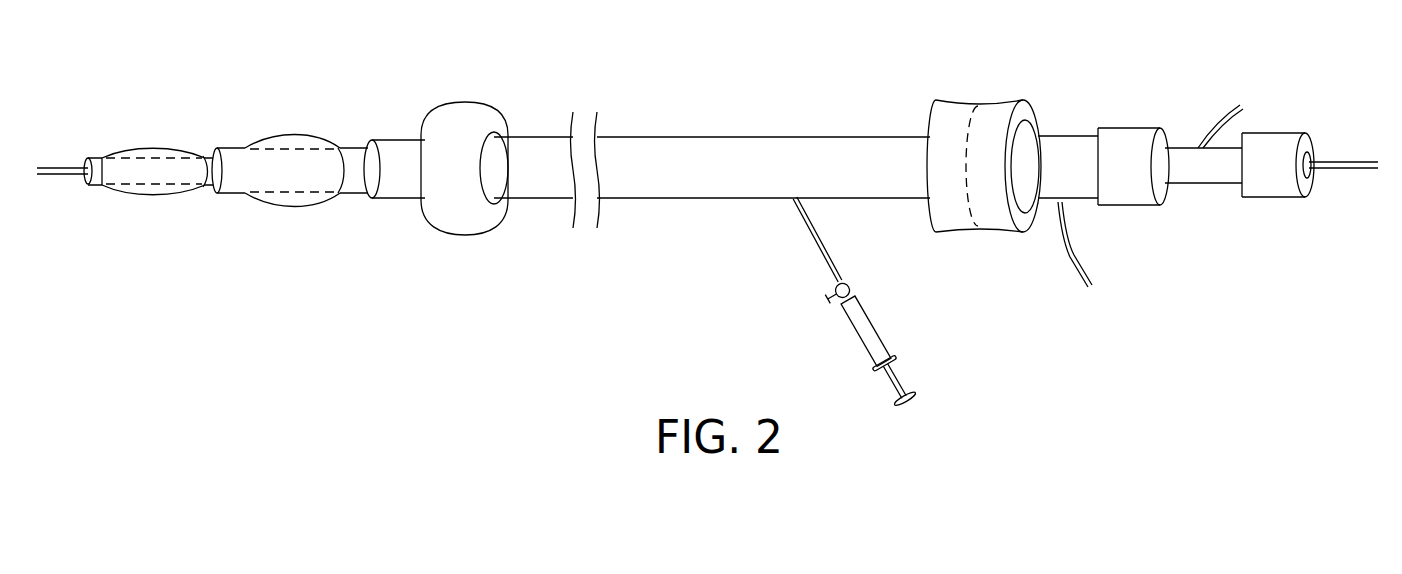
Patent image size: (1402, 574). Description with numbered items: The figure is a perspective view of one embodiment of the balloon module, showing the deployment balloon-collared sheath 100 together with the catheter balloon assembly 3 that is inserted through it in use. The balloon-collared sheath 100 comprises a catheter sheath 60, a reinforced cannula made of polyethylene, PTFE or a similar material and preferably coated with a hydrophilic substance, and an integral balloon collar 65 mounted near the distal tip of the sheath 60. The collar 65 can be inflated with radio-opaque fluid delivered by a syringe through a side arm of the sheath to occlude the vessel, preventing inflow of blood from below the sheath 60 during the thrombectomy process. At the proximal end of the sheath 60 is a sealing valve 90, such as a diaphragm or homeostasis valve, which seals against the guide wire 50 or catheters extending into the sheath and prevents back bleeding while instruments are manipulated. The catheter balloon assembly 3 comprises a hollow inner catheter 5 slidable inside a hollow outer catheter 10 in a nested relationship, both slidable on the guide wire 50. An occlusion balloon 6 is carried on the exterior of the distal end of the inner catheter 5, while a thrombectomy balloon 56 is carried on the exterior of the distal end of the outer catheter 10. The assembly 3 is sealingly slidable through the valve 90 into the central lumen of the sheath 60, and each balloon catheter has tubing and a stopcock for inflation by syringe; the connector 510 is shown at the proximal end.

The balloon-collared sheath 100 is at (873, 120).
The guide wire 50 is at (50, 177).
The occlusion balloon 6 is at (127, 193).
The inner catheter 5 is at (209, 151).
The thrombectomy balloon 56 is at (265, 203).
The catheter balloon assembly 3 is at (228, 150).
The balloon collar 65 is at (460, 236).
The catheter sheath 60 is at (663, 150).
The sealing valve 90 is at (1025, 125).
The outer catheter 10 is at (1073, 131).
The connector 510 is at (1310, 148).